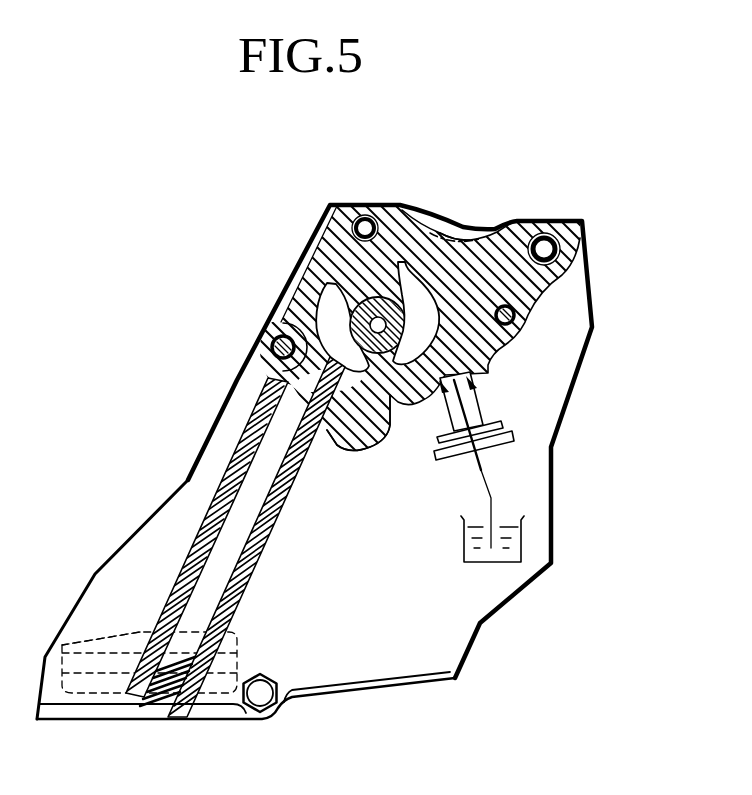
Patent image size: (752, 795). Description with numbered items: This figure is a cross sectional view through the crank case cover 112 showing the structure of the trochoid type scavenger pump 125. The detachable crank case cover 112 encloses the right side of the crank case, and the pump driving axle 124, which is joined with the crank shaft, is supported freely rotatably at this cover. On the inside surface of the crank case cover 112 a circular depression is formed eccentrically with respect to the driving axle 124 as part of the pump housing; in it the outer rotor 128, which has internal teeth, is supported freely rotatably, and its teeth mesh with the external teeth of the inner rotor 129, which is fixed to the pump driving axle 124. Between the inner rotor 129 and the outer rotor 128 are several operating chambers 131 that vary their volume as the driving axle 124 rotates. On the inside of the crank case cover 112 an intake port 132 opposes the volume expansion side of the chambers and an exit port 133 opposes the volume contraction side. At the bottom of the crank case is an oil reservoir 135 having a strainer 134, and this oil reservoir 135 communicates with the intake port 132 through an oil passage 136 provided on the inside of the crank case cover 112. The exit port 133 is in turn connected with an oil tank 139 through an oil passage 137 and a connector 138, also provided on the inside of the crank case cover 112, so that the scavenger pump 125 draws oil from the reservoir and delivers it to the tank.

The crank case cover 112 is at (565, 394).
The pump driving axle 124 is at (433, 424).
The scavenger pump 125 is at (447, 311).
The outer rotor 128 is at (230, 380).
The inner rotor 129 is at (355, 368).
The operating chambers 131 is at (323, 313).
The intake port 132 is at (317, 258).
The exit port 133 is at (399, 263).
The strainer 134 is at (92, 660).
The oil reservoir 135 is at (137, 640).
The oil passage 136 is at (260, 536).
The oil passage 137 is at (488, 364).
The connector 138 is at (493, 444).
The oil tank 139 is at (463, 540).